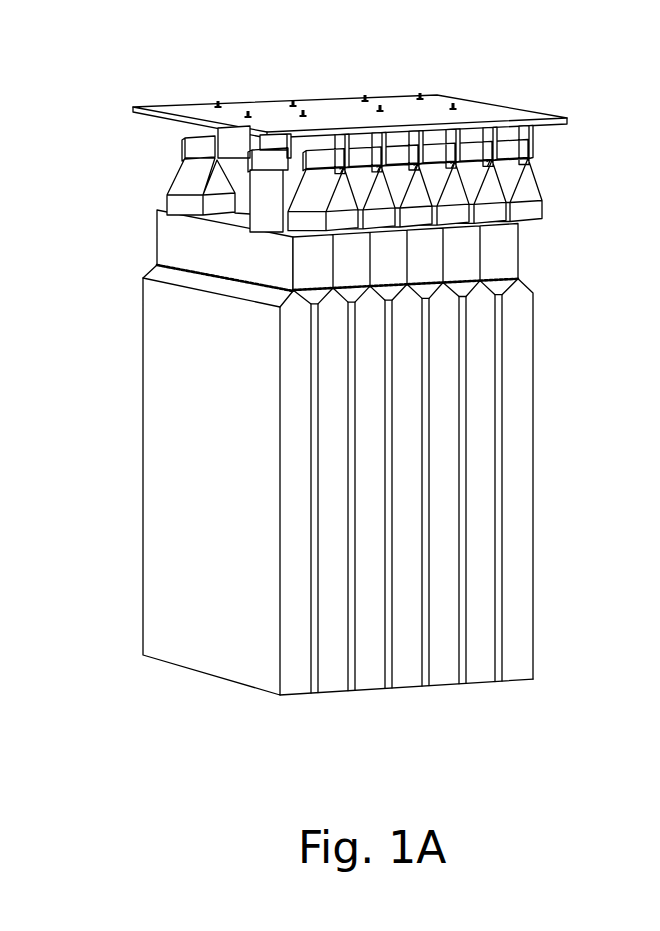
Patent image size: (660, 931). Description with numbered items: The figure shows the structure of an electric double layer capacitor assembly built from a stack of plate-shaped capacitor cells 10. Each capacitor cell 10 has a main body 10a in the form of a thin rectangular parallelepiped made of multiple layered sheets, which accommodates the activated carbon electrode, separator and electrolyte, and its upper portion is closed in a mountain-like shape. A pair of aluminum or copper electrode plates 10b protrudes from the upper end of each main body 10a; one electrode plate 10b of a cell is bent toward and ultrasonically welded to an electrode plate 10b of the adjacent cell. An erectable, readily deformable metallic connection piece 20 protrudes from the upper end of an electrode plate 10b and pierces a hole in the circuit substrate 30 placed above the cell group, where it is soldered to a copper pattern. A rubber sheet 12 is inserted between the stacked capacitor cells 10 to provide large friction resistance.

The capacitor cell 10 is at (331, 446).
The main body 10a is at (152, 350).
The electrode plate 10b is at (176, 190).
The rubber sheet 12 is at (430, 681).
The connection piece 20 is at (458, 138).
The circuit substrate 30 is at (568, 122).